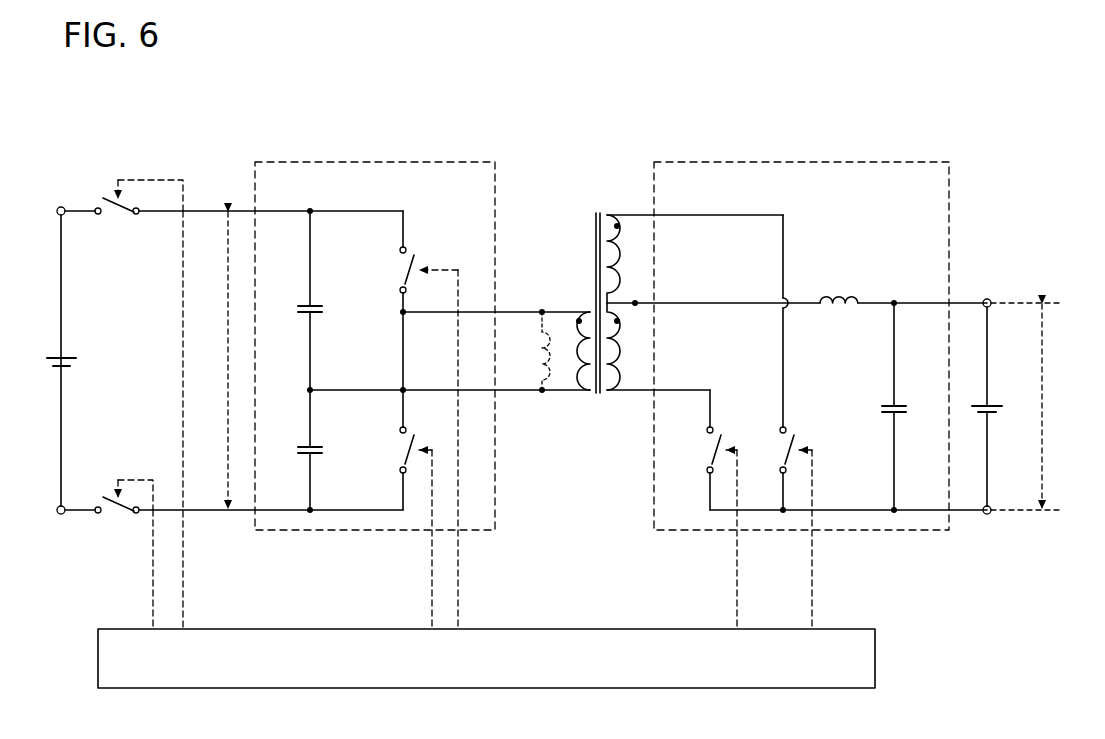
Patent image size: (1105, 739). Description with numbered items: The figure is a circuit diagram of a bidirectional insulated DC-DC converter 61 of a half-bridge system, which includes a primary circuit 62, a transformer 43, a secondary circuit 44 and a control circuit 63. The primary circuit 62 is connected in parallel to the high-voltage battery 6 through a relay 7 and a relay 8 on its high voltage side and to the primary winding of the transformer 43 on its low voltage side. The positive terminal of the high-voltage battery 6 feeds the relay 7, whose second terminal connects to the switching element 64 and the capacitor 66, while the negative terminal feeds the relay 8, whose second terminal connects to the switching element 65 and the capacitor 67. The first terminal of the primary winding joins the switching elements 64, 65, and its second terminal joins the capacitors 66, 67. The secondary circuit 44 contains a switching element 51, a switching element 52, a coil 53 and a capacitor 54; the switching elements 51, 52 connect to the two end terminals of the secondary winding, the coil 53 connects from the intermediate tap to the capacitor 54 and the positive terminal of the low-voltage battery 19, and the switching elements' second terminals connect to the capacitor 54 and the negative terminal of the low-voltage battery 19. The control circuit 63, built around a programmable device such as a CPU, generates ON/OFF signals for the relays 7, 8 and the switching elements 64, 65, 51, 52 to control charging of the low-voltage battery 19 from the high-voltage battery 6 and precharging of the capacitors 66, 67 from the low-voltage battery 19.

The high-voltage battery 6 is at (68, 358).
The relay 7 is at (114, 218).
The relay 8 is at (114, 517).
The low-voltage battery 19 is at (992, 405).
The transformer 43 is at (598, 210).
The secondary circuit 44 is at (802, 160).
The switching element 51 is at (780, 452).
The switching element 52 is at (706, 452).
The coil 53 is at (838, 310).
The capacitor 54 is at (898, 405).
The bidirectional insulated DC-DC converter 61 is at (598, 136).
The primary circuit 62 is at (367, 160).
The control circuit 63 is at (544, 628).
The switching element 64 is at (398, 272).
The switching element 65 is at (398, 452).
The capacitor 66 is at (302, 306).
The capacitor 67 is at (302, 447).